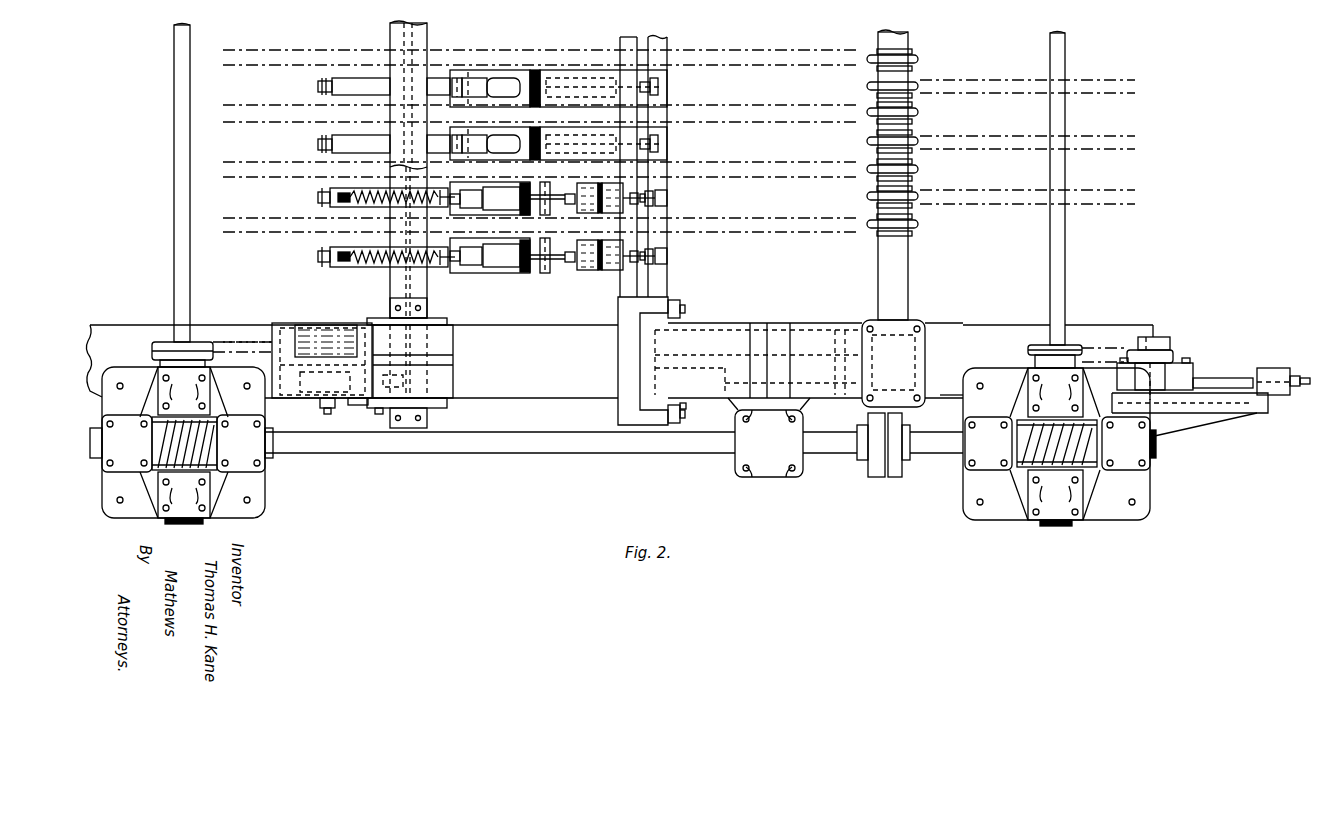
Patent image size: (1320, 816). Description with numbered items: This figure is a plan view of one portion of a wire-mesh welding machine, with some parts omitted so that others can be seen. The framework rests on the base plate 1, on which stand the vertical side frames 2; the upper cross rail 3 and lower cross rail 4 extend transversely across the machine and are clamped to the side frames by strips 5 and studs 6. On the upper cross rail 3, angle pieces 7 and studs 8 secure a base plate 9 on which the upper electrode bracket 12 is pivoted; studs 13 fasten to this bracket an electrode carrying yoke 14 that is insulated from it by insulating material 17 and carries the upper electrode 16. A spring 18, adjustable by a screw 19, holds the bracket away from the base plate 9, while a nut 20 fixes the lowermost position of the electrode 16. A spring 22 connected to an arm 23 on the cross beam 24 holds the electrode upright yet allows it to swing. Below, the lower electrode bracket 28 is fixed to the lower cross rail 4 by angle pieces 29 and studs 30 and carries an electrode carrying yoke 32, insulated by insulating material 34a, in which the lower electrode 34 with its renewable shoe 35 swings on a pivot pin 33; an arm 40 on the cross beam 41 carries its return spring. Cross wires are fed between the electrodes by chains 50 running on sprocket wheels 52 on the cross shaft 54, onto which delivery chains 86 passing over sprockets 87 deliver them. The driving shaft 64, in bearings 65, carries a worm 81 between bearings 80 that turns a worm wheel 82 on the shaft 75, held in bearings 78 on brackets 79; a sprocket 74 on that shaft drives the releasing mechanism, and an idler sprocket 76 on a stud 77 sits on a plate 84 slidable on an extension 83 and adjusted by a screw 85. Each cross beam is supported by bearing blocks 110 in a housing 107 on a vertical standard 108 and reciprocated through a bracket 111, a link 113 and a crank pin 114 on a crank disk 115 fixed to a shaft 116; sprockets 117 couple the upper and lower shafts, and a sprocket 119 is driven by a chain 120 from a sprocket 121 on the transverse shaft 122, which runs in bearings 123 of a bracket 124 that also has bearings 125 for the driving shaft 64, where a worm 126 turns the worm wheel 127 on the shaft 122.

The base plate 1 is at (527, 338).
The vertical side frame 2 is at (790, 340).
The upper cross rail 3 is at (668, 300).
The lower cross rail 4 is at (667, 60).
The strip 5 is at (682, 308).
The stud 6 is at (682, 413).
The angle piece 7 is at (660, 248).
The stud 8 is at (660, 262).
The base plate 9 is at (613, 182).
The upper electrode bracket 12 is at (548, 212).
The stud 13 is at (547, 182).
The electrode carrying yoke 14 is at (500, 170).
The upper electrode 16 is at (483, 206).
The insulating material 17 is at (546, 275).
The spring 18 is at (598, 212).
The screw 19 is at (656, 199).
The nut 20 is at (582, 182).
The spring 22 is at (376, 202).
The arm 23 is at (344, 204).
The cross beam 24 is at (390, 276).
The lower electrode bracket 28 is at (575, 72).
The angle piece 29 is at (667, 95).
The stud 30 is at (660, 86).
The electrode carrying yoke 32 is at (513, 97).
The pivot pin 33 is at (468, 70).
The lower electrode 34 is at (477, 97).
The insulating material 34a is at (535, 70).
The renewable shoe 35 is at (452, 97).
The arm 40 is at (343, 92).
The cross beam 41 is at (390, 37).
The chain 50 is at (795, 105).
The sprocket wheel 52 is at (870, 60).
The cross shaft 54 is at (907, 264).
The shaft 64 is at (538, 454).
The bearing 65 is at (773, 474).
The sprocket 74 is at (1072, 348).
The shaft 75 is at (1065, 258).
The idler sprocket 76 is at (1175, 355).
The stud 77 is at (1160, 336).
The bearing 78 is at (1031, 390).
The bracket 79 is at (1135, 490).
The bearing 80 is at (1145, 450).
The worm 81 is at (1024, 468).
The worm wheel 82 is at (968, 506).
The extension 83 is at (1225, 413).
The plate 84 is at (1190, 380).
The screw 85 is at (1303, 378).
The chain 86 is at (1030, 95).
The sprocket 87 is at (918, 86).
The housing 107 is at (453, 395).
The vertical standard 108 is at (288, 398).
The bearing block 110 is at (427, 305).
The bracket 111 is at (385, 408).
The link 113 is at (350, 405).
The crank pin 114 is at (327, 416).
The crank disk 115 is at (327, 410).
The shaft 116 is at (330, 322).
The sprocket 117 is at (300, 322).
The sprocket 119 is at (372, 318).
The chain 120 is at (248, 340).
The sprocket 121 is at (200, 344).
The shaft 122 is at (190, 290).
The bearing 123 is at (170, 385).
The bracket 124 is at (250, 512).
The bearing 125 is at (265, 444).
The worm 126 is at (206, 434).
The worm wheel 127 is at (233, 462).